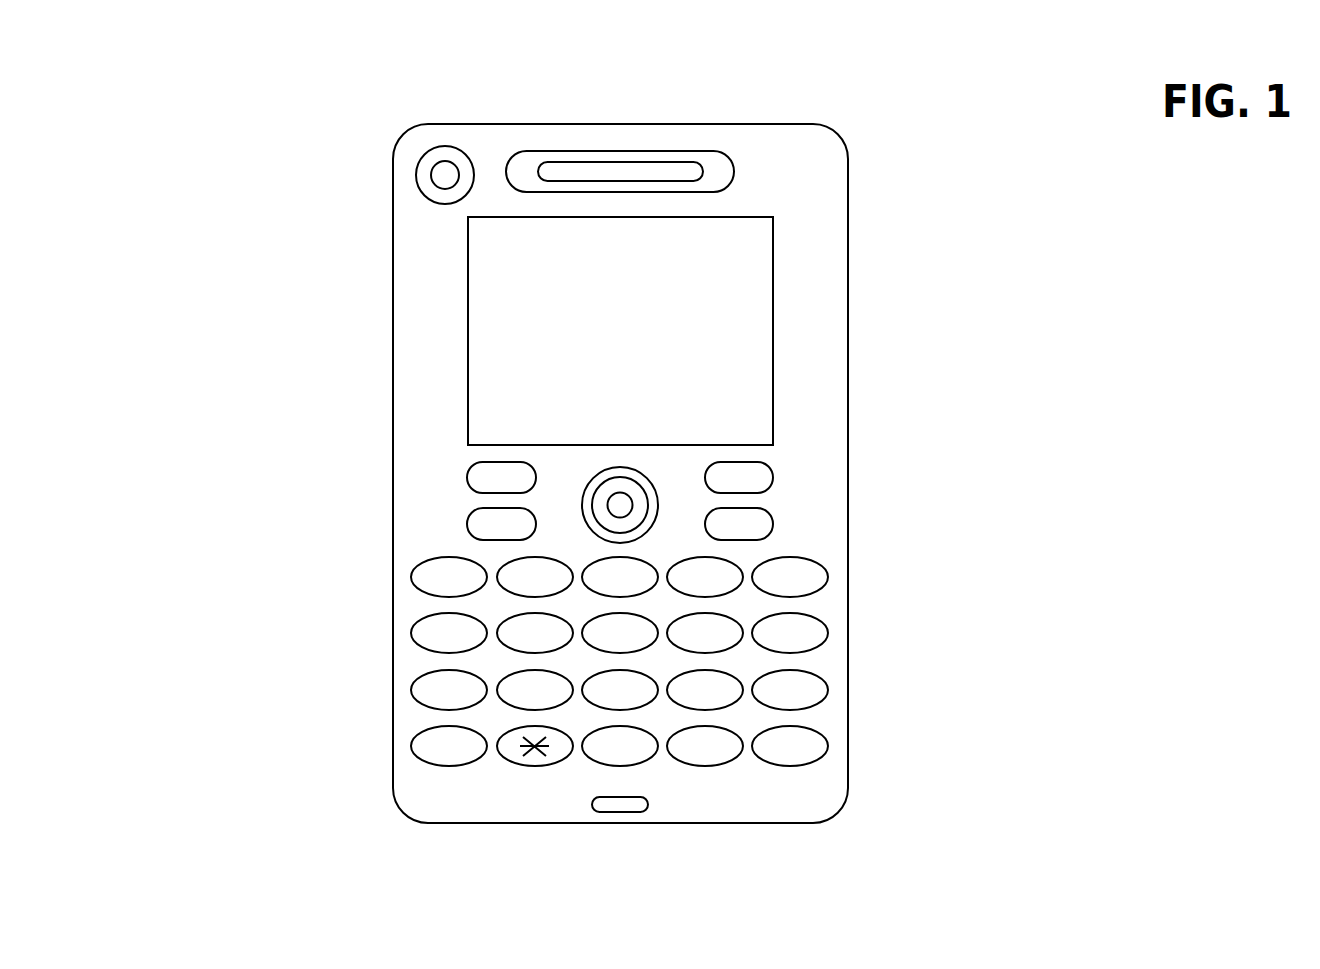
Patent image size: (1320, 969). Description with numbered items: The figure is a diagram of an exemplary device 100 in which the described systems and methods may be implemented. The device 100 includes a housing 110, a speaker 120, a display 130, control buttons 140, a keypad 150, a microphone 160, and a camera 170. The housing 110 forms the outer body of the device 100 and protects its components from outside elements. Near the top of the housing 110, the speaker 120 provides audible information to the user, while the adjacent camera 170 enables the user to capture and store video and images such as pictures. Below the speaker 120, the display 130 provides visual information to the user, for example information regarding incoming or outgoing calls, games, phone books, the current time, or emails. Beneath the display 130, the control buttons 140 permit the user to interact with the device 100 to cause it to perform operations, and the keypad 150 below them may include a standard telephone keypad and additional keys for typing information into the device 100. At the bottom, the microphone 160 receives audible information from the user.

The device 100 is at (222, 77).
The housing 110 is at (393, 474).
The speaker 120 is at (620, 151).
The display 130 is at (773, 330).
The control buttons 140 is at (745, 499).
The keypad 150 is at (722, 664).
The microphone 160 is at (620, 812).
The camera 170 is at (417, 177).